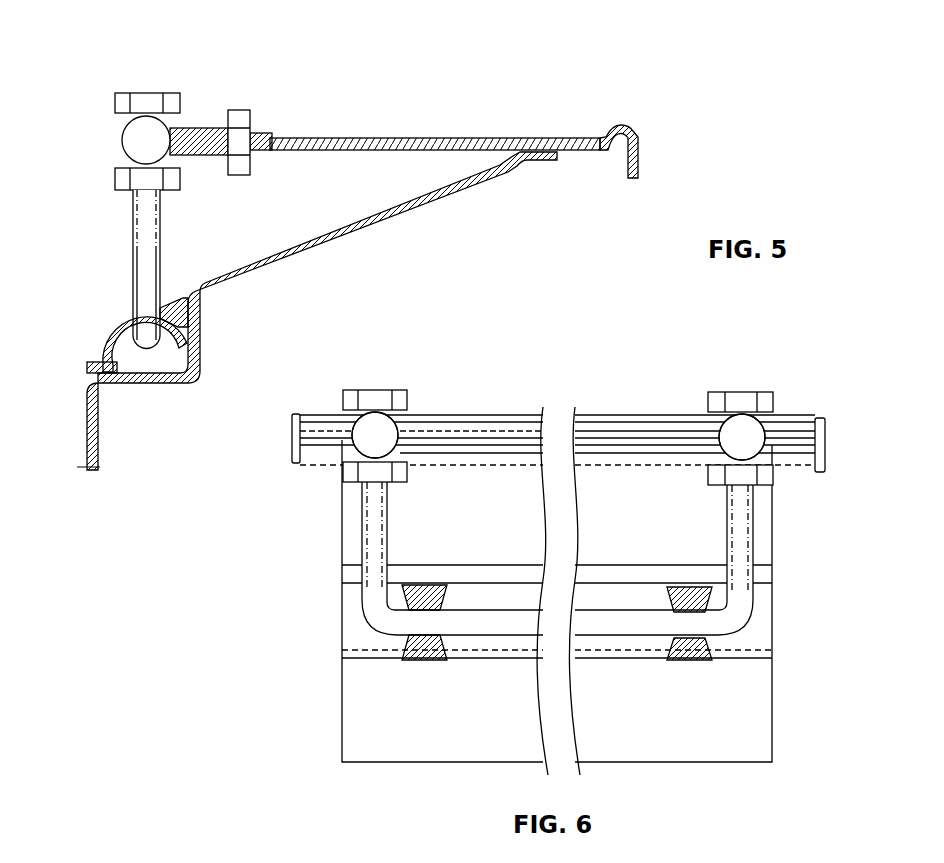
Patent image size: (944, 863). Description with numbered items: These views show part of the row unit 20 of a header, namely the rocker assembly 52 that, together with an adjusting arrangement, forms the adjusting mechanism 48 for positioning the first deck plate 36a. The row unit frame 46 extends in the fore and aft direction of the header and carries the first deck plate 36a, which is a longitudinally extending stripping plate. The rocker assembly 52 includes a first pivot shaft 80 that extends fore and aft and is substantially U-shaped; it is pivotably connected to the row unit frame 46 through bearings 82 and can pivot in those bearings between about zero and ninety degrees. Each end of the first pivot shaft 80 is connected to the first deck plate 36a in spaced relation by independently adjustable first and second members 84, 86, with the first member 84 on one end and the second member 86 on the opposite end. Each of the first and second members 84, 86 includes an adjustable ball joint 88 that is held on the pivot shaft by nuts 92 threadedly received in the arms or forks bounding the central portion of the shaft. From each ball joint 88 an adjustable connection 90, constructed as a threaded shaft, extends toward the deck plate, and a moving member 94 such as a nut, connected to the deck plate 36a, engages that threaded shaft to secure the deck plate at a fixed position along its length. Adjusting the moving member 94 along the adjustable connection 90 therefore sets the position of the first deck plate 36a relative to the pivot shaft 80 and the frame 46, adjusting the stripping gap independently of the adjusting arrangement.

In FIG. 5, the row unit 20 is at (654, 152).
In FIG. 6, the row unit 20 is at (323, 676).
In FIG. 5, the first deck plate 36a is at (440, 140).
In FIG. 6, the first deck plate 36a is at (826, 446).
In FIG. 5, the row unit frame 46 is at (385, 222).
In FIG. 6, the row unit frame 46 is at (760, 708).
In FIG. 5, the adjusting mechanism 48 is at (114, 44).
In FIG. 5, the rocker assembly 52 is at (101, 222).
In FIG. 5, the first pivot shaft 80 is at (133, 247).
In FIG. 6, the first pivot shaft 80 is at (492, 625).
In FIG. 5, the bearings 82 is at (125, 330).
In FIG. 6, the bearings 82 is at (422, 660).
In FIG. 5, the first member 84 is at (121, 140).
In FIG. 6, the first member 84 is at (718, 422).
In FIG. 6, the second member 86 is at (398, 420).
In FIG. 6, the adjustable ball joint 88 is at (390, 443).
In FIG. 5, the adjustable connection 90 is at (200, 127).
In FIG. 5, the nuts 92 is at (115, 100).
In FIG. 6, the nuts 92 is at (395, 390).
In FIG. 5, the moving member 94 is at (240, 110).